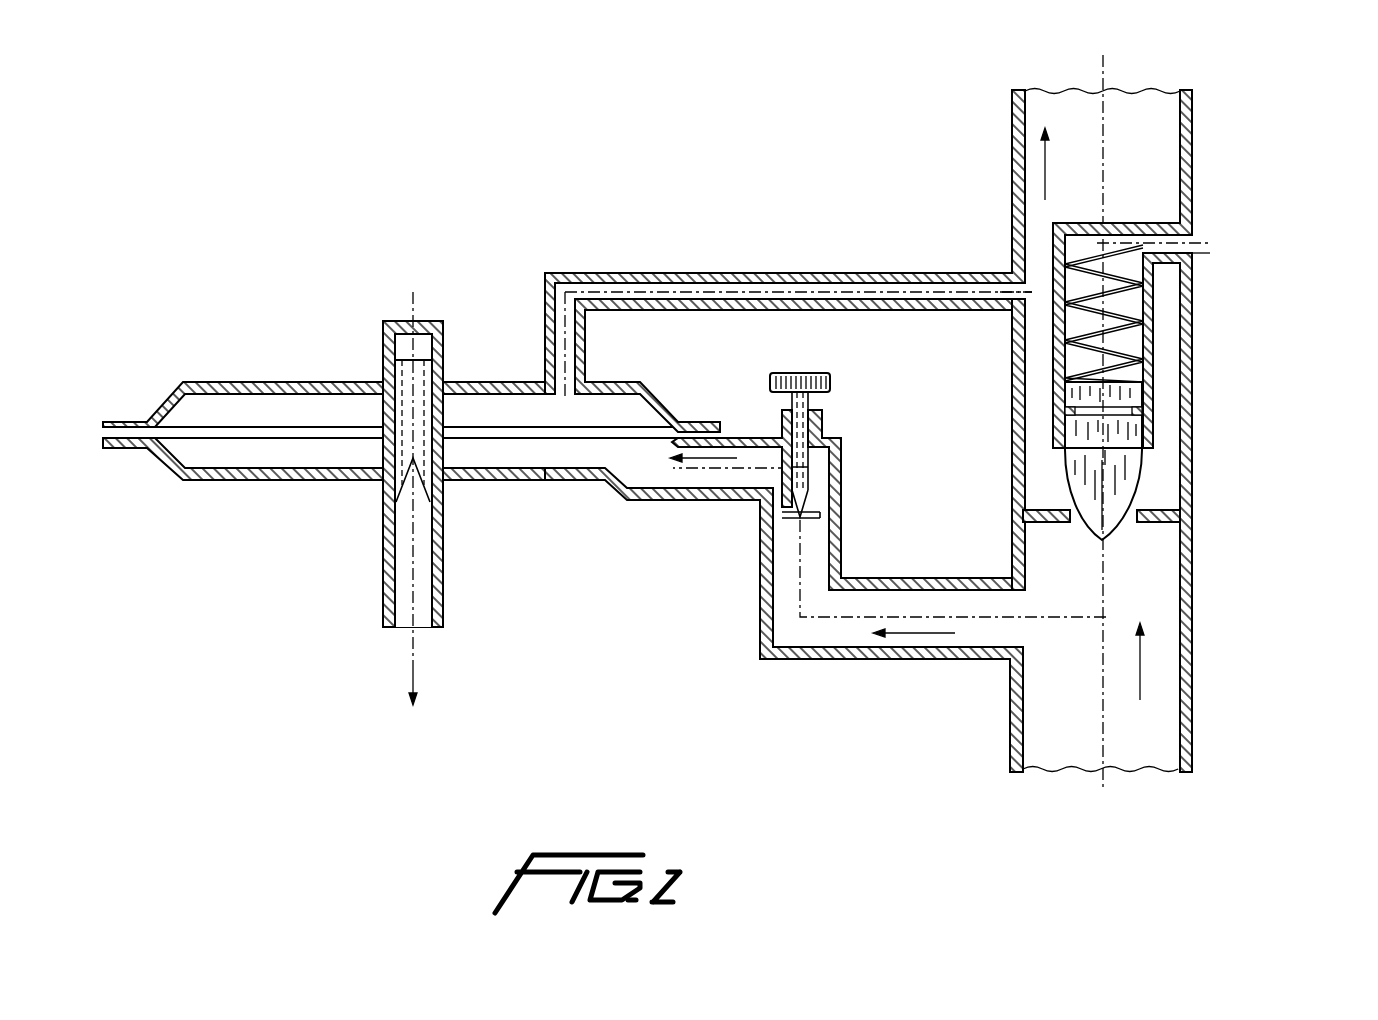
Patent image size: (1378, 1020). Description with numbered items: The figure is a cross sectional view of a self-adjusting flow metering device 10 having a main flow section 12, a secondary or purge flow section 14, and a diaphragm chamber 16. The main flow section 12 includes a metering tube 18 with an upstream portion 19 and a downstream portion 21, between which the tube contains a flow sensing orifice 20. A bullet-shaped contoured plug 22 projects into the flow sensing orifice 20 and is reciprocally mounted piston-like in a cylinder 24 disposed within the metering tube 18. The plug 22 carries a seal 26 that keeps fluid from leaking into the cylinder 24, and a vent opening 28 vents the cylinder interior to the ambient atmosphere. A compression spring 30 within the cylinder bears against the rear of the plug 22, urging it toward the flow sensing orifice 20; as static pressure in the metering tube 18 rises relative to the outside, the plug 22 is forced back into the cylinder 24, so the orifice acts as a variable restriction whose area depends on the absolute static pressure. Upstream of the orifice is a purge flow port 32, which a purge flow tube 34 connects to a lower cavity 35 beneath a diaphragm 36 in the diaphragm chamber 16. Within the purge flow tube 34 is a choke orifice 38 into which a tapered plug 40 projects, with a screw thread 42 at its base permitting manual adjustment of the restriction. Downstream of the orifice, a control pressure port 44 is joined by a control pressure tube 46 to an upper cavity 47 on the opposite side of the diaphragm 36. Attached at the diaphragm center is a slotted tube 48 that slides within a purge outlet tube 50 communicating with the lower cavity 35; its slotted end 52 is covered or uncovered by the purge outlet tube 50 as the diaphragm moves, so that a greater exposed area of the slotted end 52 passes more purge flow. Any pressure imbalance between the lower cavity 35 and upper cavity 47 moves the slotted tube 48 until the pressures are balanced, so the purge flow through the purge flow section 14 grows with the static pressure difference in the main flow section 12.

The flow metering device 10 is at (346, 150).
The main flow section 12 is at (1296, 646).
The purge flow section 14 is at (727, 578).
The diaphragm chamber 16 is at (235, 372).
The metering tube 18 is at (1192, 556).
The upstream portion 19 is at (1178, 733).
The flow sensing orifice 20 is at (1135, 523).
The downstream portion 21 is at (1183, 133).
The contoured plug 22 is at (1143, 488).
The cylinder 24 is at (1160, 312).
The seal 26 is at (1153, 410).
The vent opening 28 is at (1212, 245).
The compression spring 30 is at (1153, 350).
The purge flow port 32 is at (1030, 648).
The purge flow tube 34 is at (875, 578).
The lower cavity 35 is at (530, 452).
The diaphragm 36 is at (205, 440).
The choke orifice 38 is at (797, 515).
The tapered plug 40 is at (815, 477).
The screw thread 42 is at (816, 402).
The control pressure port 44 is at (1032, 284).
The control pressure tube 46 is at (632, 272).
The upper cavity 47 is at (483, 410).
The slotted tube 48 is at (388, 443).
The purge outlet tube 50 is at (380, 600).
The slotted end 52 is at (425, 500).